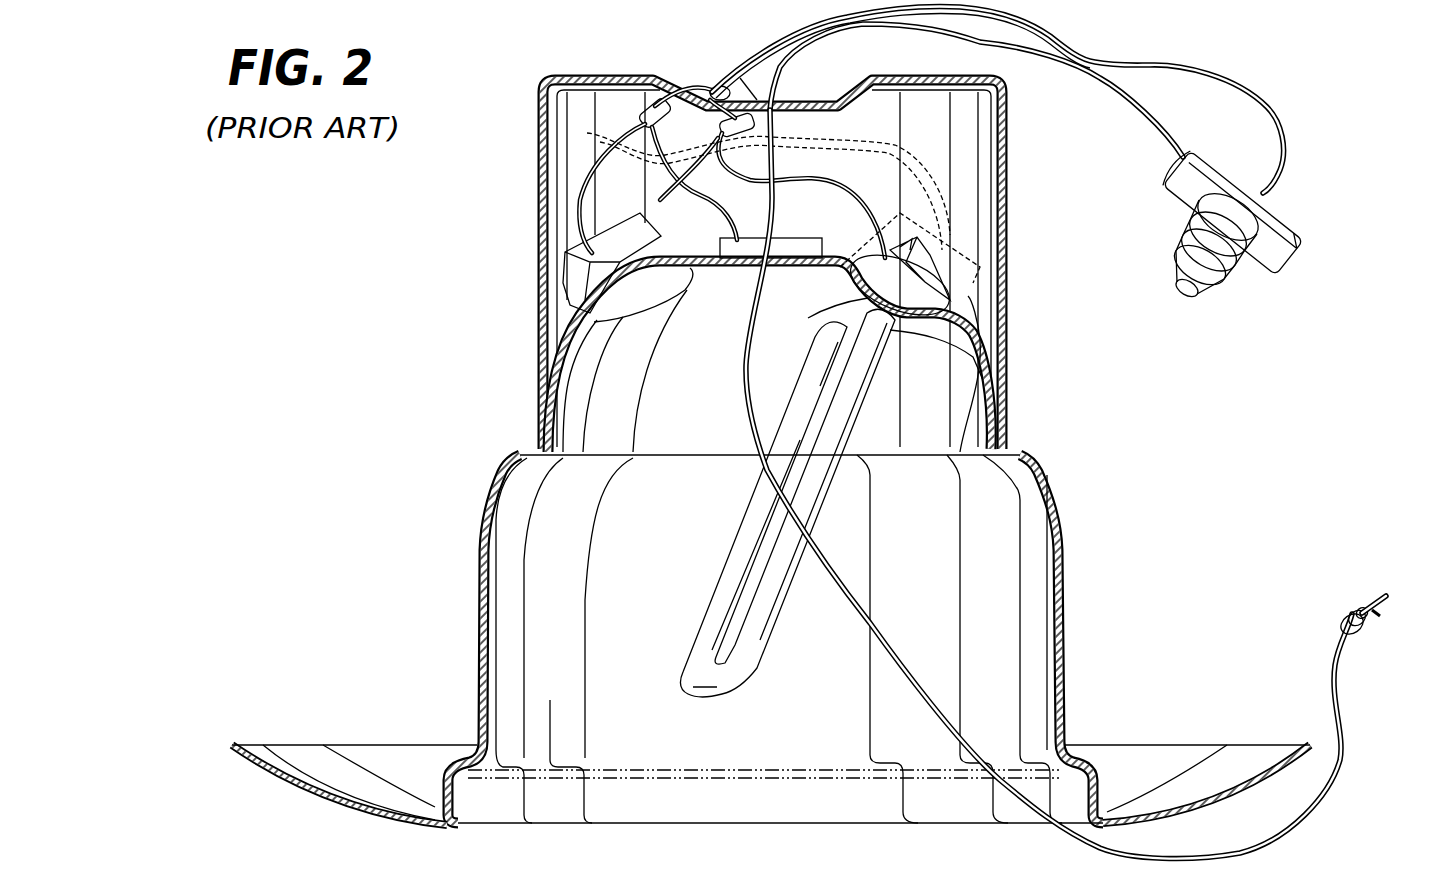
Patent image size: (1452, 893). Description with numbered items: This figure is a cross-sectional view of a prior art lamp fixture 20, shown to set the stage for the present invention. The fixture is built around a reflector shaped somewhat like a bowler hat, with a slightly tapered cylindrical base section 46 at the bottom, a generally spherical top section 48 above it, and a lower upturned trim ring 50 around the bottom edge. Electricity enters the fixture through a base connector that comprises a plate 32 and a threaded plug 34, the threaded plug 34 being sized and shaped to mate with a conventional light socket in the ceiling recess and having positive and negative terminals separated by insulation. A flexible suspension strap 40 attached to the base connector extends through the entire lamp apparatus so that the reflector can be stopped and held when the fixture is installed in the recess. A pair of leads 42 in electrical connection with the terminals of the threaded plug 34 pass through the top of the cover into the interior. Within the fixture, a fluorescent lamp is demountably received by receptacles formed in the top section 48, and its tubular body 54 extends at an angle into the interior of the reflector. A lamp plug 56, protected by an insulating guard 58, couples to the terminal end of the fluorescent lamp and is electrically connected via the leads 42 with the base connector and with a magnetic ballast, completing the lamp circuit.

The lamp fixture 20 is at (418, 395).
The plate 32 is at (1307, 253).
The threaded plug 34 is at (1230, 293).
The flexible suspension strap 40 is at (1338, 678).
The leads 42 is at (1133, 93).
The tapered cylindrical base section 46 is at (480, 670).
The spherical top section 48 is at (578, 322).
The trim ring 50 is at (265, 770).
The tubular body 54 is at (776, 630).
The lamp plug 56 is at (955, 290).
The insulating guard 58 is at (577, 237).